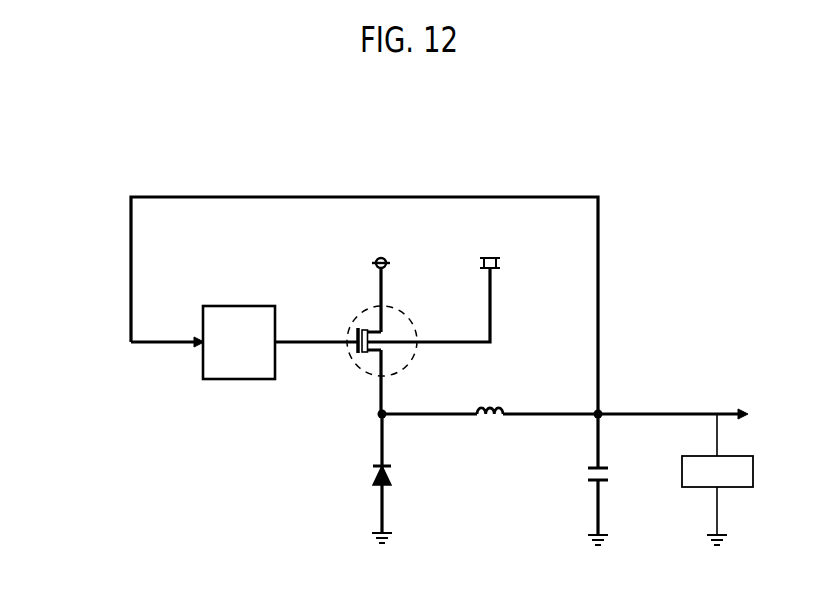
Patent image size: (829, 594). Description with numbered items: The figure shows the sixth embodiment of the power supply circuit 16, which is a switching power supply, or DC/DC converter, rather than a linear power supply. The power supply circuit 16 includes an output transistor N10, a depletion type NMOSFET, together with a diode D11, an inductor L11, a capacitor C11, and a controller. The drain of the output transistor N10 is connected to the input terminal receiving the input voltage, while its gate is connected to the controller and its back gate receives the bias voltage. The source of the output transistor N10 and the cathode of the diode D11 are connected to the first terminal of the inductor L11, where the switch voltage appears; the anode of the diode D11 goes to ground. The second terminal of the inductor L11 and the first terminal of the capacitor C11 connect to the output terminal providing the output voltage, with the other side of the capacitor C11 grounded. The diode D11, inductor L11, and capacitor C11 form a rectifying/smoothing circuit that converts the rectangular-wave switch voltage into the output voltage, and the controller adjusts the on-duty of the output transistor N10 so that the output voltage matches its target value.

The power supply circuit 16 is at (61, 118).
The output transistor N10 is at (387, 349).
The inductor L11 is at (491, 403).
The diode D11 is at (395, 472).
The capacitor C11 is at (610, 474).